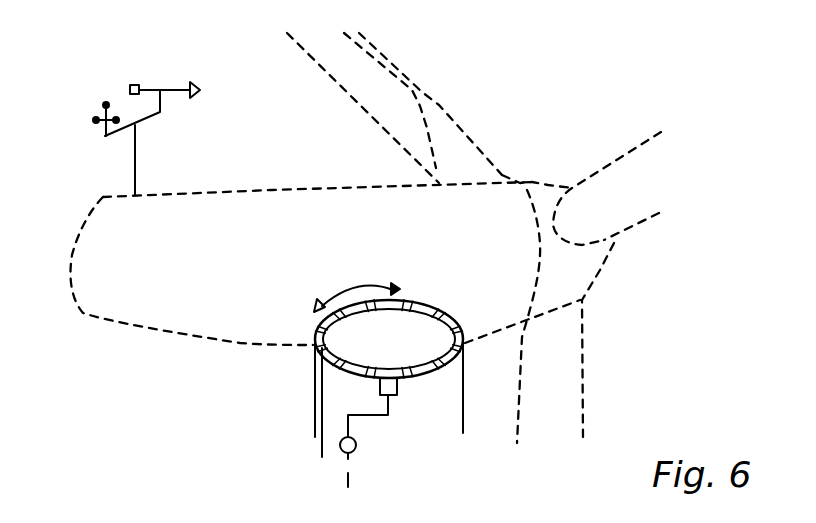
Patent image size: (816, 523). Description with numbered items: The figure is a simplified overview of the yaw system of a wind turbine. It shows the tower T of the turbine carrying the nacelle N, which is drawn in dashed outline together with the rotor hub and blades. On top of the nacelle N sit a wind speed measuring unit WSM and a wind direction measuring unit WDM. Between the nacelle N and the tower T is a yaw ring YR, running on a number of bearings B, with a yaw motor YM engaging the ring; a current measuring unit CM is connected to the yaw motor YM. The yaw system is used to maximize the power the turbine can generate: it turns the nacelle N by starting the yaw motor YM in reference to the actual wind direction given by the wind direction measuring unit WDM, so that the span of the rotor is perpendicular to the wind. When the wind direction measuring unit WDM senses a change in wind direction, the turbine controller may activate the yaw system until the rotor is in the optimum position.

The wind direction measuring unit WDM is at (172, 91).
The wind speed measuring unit WSM is at (97, 130).
The nacelle N is at (187, 330).
The tower T is at (317, 424).
The yaw ring YR is at (437, 313).
The yaw motor YM is at (398, 386).
The bearings B is at (417, 380).
The current measuring unit CM is at (354, 449).